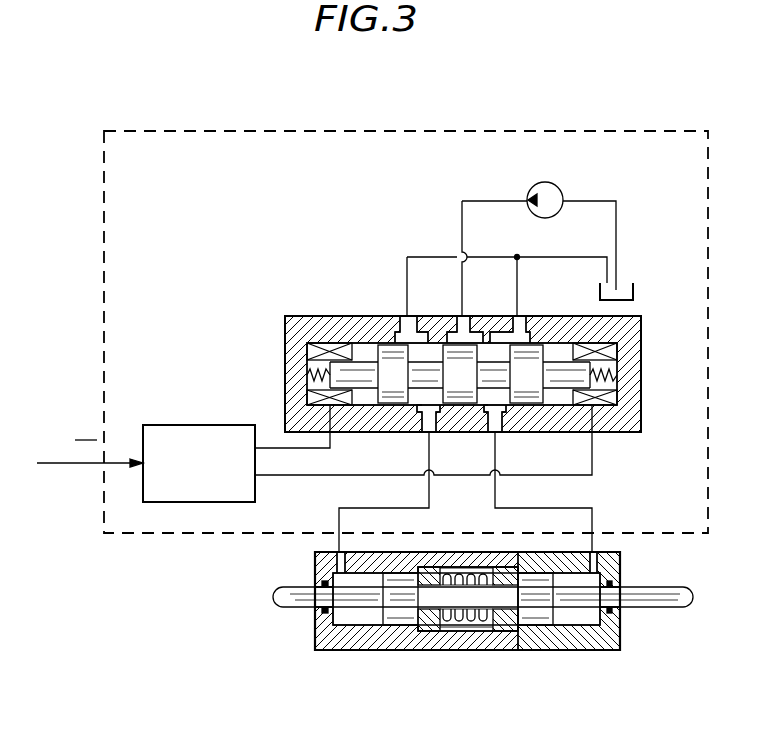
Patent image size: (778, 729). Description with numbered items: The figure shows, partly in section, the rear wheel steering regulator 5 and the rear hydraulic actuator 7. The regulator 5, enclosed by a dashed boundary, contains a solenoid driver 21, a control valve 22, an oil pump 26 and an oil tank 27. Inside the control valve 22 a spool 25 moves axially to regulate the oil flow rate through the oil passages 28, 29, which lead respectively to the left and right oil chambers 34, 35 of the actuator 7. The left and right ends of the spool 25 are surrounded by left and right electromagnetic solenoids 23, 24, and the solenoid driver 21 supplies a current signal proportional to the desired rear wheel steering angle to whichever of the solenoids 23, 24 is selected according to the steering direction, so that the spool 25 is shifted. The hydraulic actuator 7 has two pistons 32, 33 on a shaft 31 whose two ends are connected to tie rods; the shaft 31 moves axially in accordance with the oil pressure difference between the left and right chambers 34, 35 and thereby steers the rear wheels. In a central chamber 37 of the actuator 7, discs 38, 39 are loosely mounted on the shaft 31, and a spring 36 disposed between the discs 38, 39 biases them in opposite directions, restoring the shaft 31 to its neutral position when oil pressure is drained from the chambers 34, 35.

The rear wheel steering regulator 5 is at (646, 131).
The rear hydraulic actuator 7 is at (298, 632).
The solenoid driver 21 is at (238, 424).
The control valve 22 is at (345, 308).
The left electromagnetic solenoid 23 is at (310, 347).
The right electromagnetic solenoid 24 is at (610, 350).
The spool 25 is at (560, 370).
The oil pump 26 is at (560, 192).
The oil tank 27 is at (637, 295).
The oil passage 28 is at (425, 453).
The oil passage 29 is at (498, 452).
The shaft 31 is at (577, 630).
The piston 32 is at (395, 627).
The piston 33 is at (537, 633).
The left oil chamber 34 is at (338, 627).
The right oil chamber 35 is at (603, 645).
The spring 36 is at (460, 552).
The central chamber 37 is at (467, 633).
The disc 38 is at (423, 633).
The disc 39 is at (503, 633).